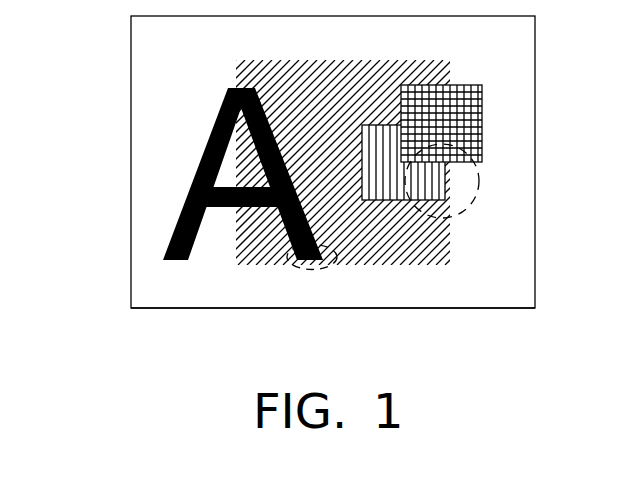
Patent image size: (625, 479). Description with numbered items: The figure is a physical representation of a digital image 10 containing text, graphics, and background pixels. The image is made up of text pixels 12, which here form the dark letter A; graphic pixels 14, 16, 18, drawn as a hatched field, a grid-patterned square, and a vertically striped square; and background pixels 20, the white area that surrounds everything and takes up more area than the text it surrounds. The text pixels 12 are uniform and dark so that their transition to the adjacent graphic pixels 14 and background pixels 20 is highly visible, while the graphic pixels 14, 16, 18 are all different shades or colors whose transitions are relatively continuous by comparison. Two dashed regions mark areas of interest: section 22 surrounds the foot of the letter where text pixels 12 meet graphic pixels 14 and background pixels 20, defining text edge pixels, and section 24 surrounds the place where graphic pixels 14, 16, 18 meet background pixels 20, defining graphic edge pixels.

The display system 10 is at (94, 27).
The text pixels 12 is at (210, 136).
The graphic pixels 14 is at (405, 258).
The graphic pixels 16 is at (476, 100).
The graphic pixels 18 is at (435, 178).
The background pixels 20 is at (223, 295).
The section 22 is at (313, 272).
The section 24 is at (487, 197).